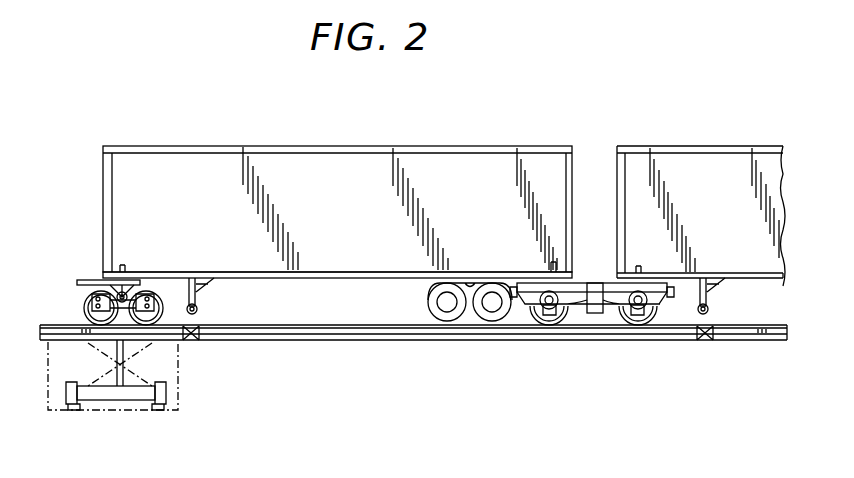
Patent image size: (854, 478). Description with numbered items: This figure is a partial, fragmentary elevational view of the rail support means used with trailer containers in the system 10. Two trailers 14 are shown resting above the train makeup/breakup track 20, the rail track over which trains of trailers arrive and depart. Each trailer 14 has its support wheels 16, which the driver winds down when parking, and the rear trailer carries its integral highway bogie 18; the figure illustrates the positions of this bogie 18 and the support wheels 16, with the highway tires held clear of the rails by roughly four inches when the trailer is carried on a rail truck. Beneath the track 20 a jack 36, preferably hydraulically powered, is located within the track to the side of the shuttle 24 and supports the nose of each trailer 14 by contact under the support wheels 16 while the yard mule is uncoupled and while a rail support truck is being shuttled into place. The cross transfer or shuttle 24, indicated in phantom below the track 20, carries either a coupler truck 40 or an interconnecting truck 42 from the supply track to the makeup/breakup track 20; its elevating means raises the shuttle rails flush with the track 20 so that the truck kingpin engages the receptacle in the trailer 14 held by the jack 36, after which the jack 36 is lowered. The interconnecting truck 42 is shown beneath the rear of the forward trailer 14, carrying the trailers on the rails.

The system 10 is at (444, 187).
The trailer 14 is at (347, 218).
The support wheels 16 is at (199, 311).
The integral highway bogie 18 is at (471, 318).
The train makeup/breakup track 20 is at (753, 344).
The cross transfer or shuttle 24 is at (124, 396).
The jack 36 is at (192, 348).
The coupler truck 40 is at (110, 368).
The interconnecting truck 42 is at (597, 332).